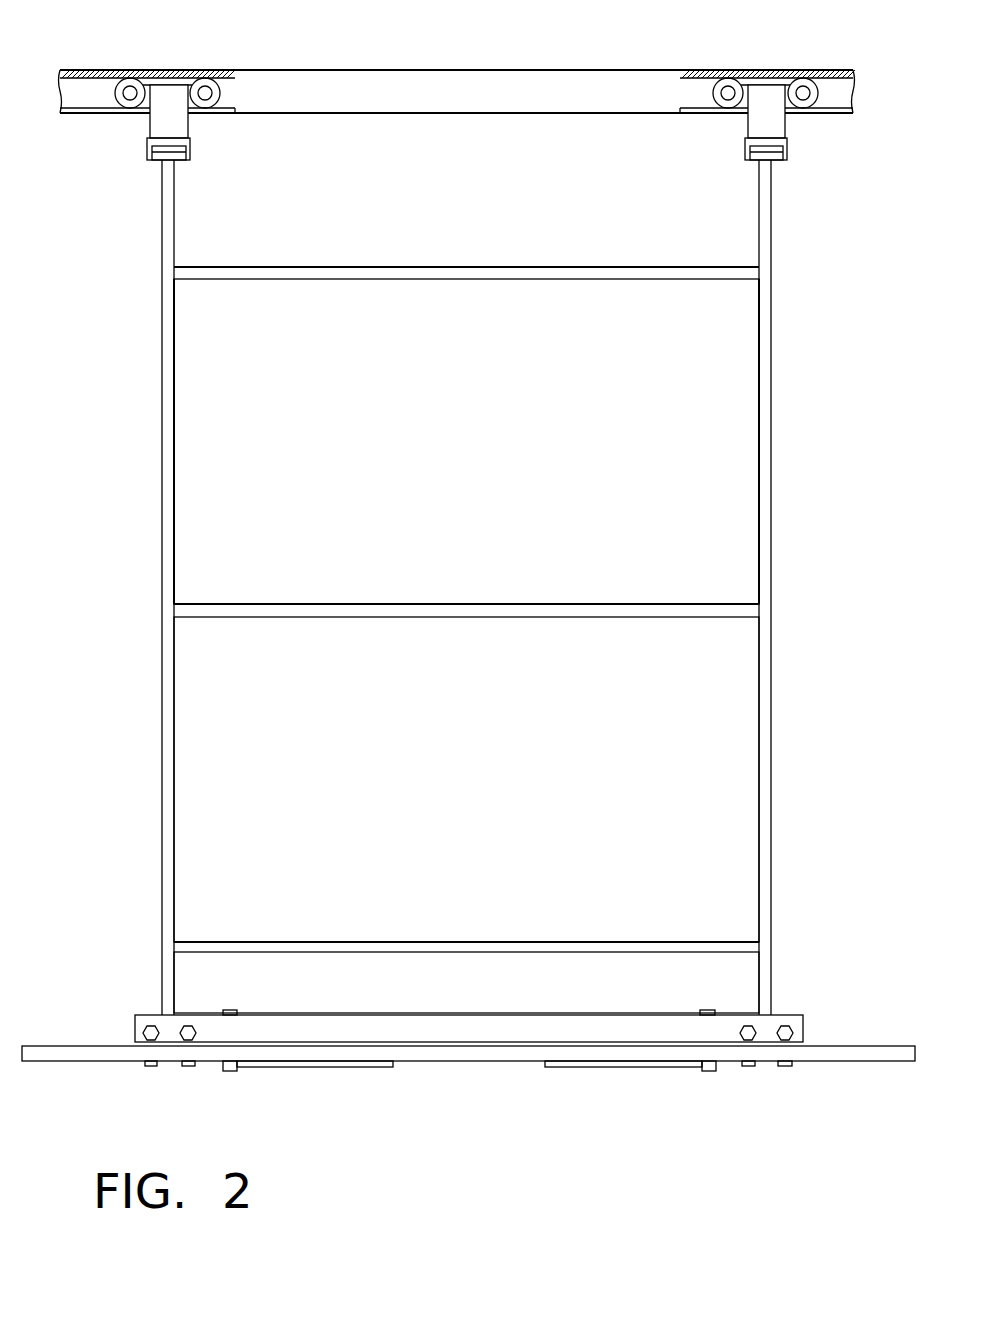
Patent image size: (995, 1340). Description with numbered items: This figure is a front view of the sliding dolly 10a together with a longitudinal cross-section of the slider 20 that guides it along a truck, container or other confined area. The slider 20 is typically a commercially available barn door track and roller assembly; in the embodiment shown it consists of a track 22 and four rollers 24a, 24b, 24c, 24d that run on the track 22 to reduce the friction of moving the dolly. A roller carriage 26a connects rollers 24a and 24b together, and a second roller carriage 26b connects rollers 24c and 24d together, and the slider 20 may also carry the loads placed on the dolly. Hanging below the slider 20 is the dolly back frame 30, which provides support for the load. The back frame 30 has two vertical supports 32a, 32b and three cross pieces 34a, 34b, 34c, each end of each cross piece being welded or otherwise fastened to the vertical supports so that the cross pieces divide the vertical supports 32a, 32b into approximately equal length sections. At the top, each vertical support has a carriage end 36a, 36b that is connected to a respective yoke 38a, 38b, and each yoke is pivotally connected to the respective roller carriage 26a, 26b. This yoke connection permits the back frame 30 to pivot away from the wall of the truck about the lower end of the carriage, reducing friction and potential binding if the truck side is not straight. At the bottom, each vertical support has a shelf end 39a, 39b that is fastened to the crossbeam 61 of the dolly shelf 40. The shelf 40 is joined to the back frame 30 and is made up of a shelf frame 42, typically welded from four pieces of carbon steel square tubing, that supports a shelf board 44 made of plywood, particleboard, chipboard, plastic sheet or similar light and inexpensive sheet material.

The sliding dolly 10a is at (812, 372).
The slider 20 is at (345, 65).
The track 22 is at (616, 65).
The roller 24a is at (808, 72).
The roller 24b is at (725, 72).
The roller 24c is at (208, 72).
The roller 24d is at (122, 72).
The roller carriage 26a is at (788, 125).
The roller carriage 26b is at (190, 125).
The dolly back frame 30 is at (775, 480).
The vertical support 32a is at (771, 527).
The vertical support 32b is at (174, 440).
The cross piece 34a is at (432, 267).
The cross piece 34b is at (432, 604).
The cross piece 34c is at (432, 942).
The carriage end 36a is at (771, 228).
The carriage end 36b is at (174, 228).
The yoke 38a is at (750, 160).
The yoke 38b is at (152, 160).
The shelf end 39a is at (771, 992).
The shelf end 39b is at (174, 1005).
The dolly shelf 40 is at (455, 1066).
The shelf frame 42 is at (865, 1061).
The shelf board 44 is at (825, 1045).
The crossbeam 61 is at (455, 1013).